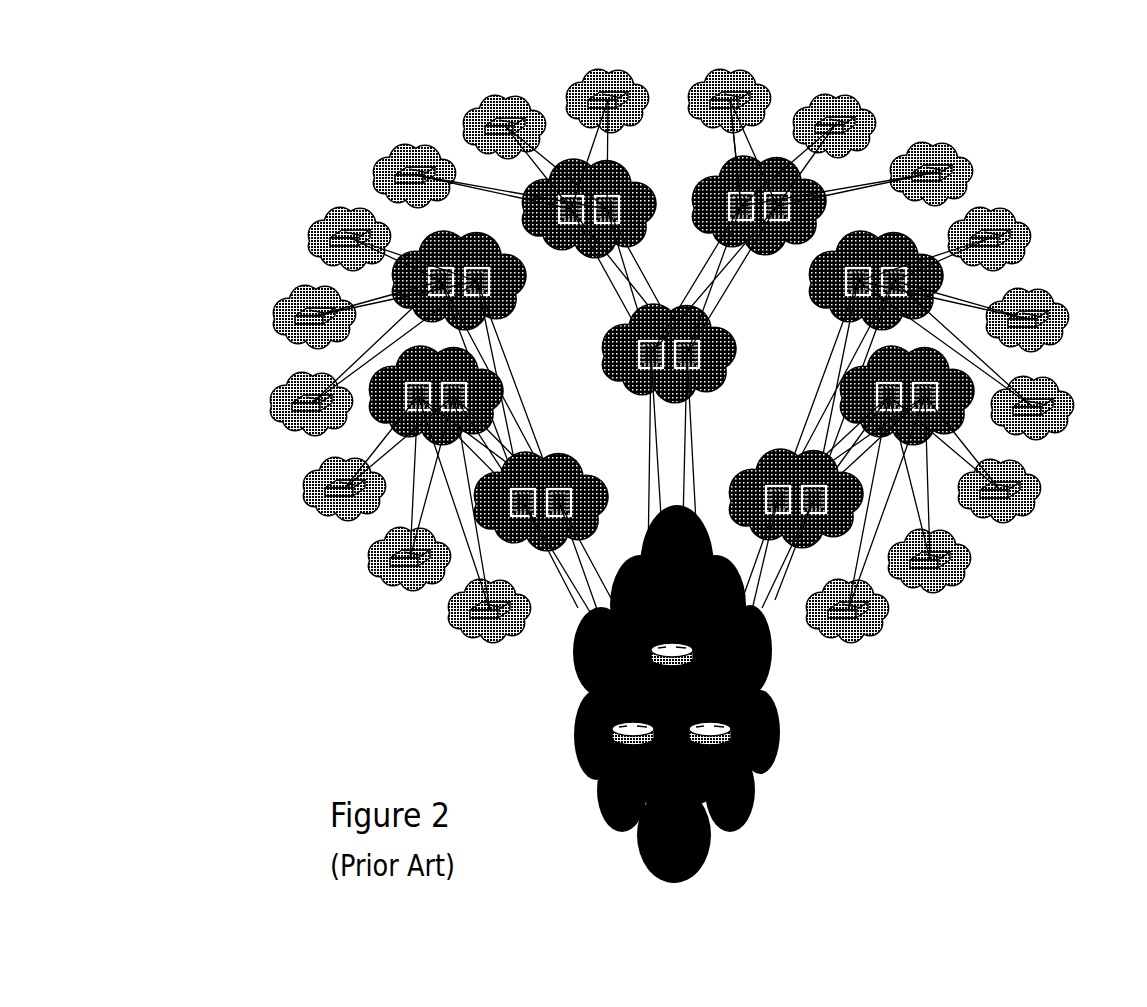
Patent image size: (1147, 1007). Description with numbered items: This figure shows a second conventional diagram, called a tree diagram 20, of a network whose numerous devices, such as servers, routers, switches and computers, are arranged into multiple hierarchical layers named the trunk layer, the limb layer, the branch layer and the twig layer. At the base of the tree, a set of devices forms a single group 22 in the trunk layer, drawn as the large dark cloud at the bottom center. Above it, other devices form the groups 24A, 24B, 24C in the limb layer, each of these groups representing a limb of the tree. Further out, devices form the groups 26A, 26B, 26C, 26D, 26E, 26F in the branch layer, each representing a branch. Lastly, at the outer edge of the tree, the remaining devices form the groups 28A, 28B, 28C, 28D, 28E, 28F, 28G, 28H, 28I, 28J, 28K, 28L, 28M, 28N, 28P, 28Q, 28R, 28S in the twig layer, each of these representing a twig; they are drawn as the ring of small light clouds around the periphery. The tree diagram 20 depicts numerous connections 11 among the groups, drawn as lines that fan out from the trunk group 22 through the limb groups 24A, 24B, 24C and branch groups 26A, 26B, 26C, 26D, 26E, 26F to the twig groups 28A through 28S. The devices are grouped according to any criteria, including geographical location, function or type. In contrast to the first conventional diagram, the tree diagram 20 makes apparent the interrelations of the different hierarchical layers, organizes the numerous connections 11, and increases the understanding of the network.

The tree diagram 20 is at (1073, 84).
The group in the trunk layer 22 is at (775, 722).
The group in the limb layer 24A is at (855, 557).
The group in the limb layer 24B is at (478, 562).
The group in the limb layer 24C is at (674, 307).
The group in the branch layer 26A is at (828, 206).
The group in the branch layer 26B is at (943, 287).
The group in the branch layer 26C is at (960, 420).
The group in the branch layer 26D is at (640, 168).
The group in the branch layer 26E is at (430, 243).
The group in the branch layer 26F is at (383, 420).
The group in the twig layer 28A is at (832, 640).
The group in the twig layer 28B is at (975, 580).
The group in the twig layer 28C is at (1038, 520).
The group in the twig layer 28D is at (1070, 397).
The group in the twig layer 28E is at (1062, 338).
The group in the twig layer 28F is at (1032, 238).
The group in the twig layer 28G is at (963, 155).
The group in the twig layer 28H is at (875, 103).
The group in the twig layer 28I is at (768, 84).
The group in the twig layer 28J is at (582, 80).
The group in the twig layer 28K is at (478, 110).
The group in the twig layer 28L is at (388, 156).
The group in the twig layer 28M is at (310, 230).
The group in the twig layer 28N is at (280, 312).
The group in the twig layer 28P is at (278, 402).
The group in the twig layer 28Q is at (302, 498).
The group in the twig layer 28R is at (372, 572).
The group in the twig layer 28S is at (466, 640).
The connections 11 is at (777, 142).